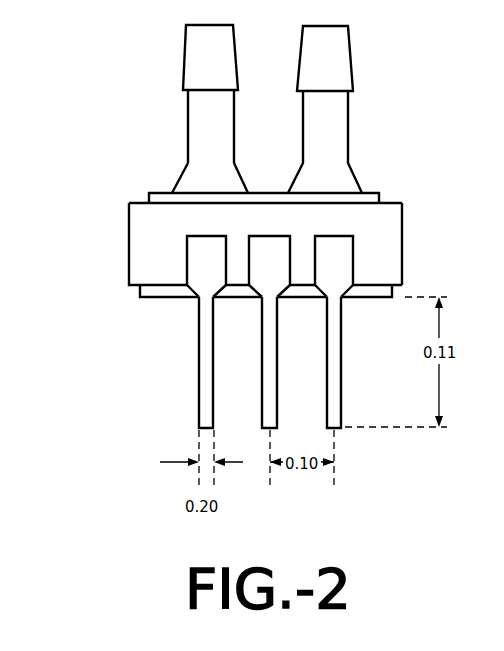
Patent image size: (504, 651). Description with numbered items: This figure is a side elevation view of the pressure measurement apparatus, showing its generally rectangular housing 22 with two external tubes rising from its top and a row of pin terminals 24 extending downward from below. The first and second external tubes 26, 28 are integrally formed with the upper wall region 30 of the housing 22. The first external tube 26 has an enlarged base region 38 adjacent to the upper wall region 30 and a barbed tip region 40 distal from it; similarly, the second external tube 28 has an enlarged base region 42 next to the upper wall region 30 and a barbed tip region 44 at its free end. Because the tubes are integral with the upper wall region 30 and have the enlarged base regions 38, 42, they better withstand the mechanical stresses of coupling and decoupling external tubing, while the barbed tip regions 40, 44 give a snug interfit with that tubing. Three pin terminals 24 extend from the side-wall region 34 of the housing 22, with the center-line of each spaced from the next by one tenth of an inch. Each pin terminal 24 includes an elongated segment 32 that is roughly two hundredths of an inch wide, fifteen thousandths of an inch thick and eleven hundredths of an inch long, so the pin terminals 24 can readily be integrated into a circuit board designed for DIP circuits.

The housing 22 is at (402, 207).
The pin terminals 24 is at (180, 377).
The first external tube 26 is at (348, 127).
The second external tube 28 is at (188, 128).
The upper wall region 30 is at (258, 180).
The elongated segment 32 is at (214, 334).
The side-wall region 34 is at (382, 237).
The enlarged base region 38 is at (352, 175).
The barbed tip region 40 is at (353, 66).
The enlarged base region 42 is at (193, 182).
The barbed tip region 44 is at (184, 53).